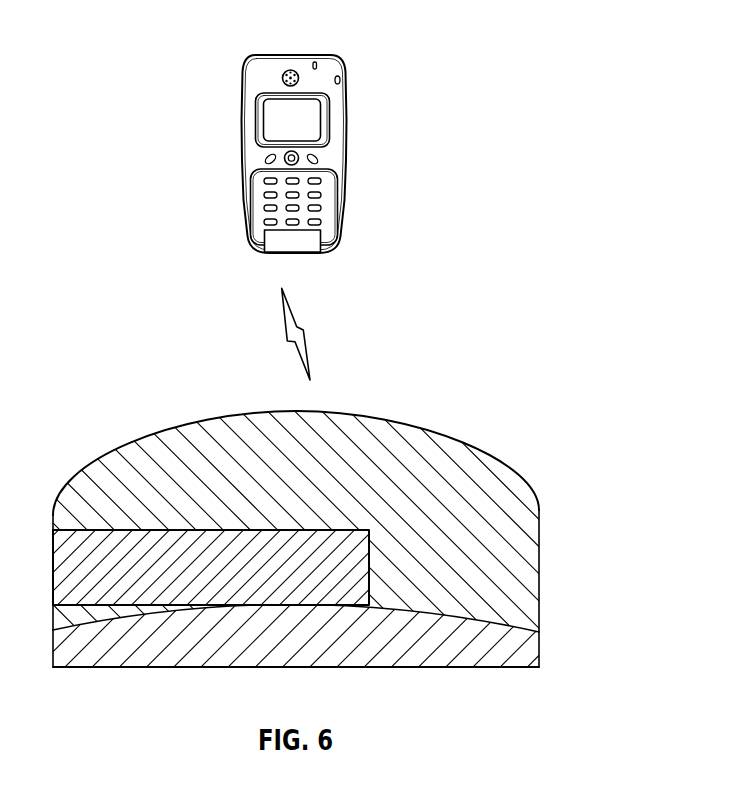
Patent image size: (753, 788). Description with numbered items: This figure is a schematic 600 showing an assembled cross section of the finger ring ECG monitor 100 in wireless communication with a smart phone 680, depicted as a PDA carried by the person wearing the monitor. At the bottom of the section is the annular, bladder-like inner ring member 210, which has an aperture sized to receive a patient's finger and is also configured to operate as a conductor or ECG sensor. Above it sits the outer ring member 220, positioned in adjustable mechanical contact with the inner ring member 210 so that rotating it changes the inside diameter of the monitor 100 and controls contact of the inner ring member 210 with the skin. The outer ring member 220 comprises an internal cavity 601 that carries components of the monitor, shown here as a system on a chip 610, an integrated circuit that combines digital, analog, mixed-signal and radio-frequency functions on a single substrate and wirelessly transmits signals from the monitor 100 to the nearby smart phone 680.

The schematic 600 is at (465, 44).
The smart phone 680 is at (244, 162).
The finger ring ECG monitor 100 is at (376, 522).
The outer ring member 220 is at (128, 442).
The internal cavity 601 is at (446, 458).
The system on a chip 610 is at (257, 530).
The inner ring member 210 is at (442, 667).